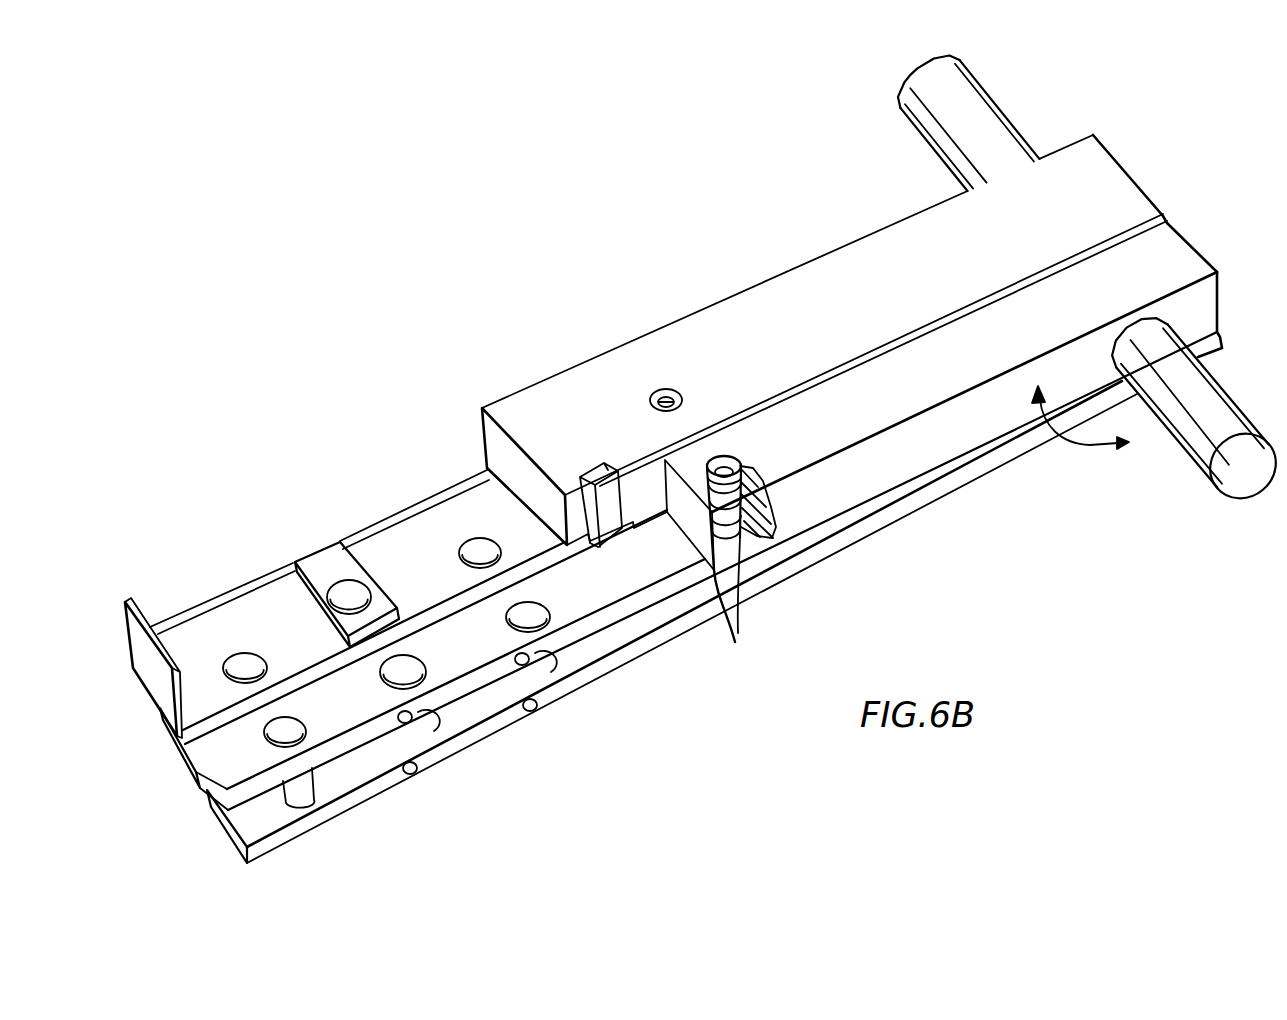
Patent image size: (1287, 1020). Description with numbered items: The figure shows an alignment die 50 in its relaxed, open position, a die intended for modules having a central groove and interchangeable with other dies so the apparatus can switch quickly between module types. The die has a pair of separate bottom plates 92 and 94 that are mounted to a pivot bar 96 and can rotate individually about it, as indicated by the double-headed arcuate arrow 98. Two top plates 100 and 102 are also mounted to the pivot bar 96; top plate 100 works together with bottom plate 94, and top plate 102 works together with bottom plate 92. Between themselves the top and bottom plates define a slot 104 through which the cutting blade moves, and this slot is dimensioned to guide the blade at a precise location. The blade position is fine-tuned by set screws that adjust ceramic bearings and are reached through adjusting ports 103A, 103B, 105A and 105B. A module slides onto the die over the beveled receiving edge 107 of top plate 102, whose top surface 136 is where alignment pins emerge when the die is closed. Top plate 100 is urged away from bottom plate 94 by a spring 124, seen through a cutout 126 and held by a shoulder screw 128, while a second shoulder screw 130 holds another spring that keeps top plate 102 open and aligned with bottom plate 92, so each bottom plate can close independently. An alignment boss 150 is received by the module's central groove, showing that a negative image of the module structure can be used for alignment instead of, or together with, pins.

The alignment die 50 is at (546, 349).
The bottom plate 92 is at (167, 741).
The bottom plate 94 is at (283, 833).
The pivot bar 96 is at (1187, 465).
The double-headed arcuate arrow 98 is at (1080, 446).
The top plate 100 is at (893, 403).
The top plate 102 is at (746, 295).
The adjusting port 103A is at (418, 780).
The adjusting port 103B is at (418, 735).
The slot 104 is at (297, 680).
The adjusting port 105A is at (540, 708).
The adjusting port 105B is at (536, 666).
The receiving edge 107 is at (432, 502).
The spring 124 is at (738, 606).
The cutout 126 is at (771, 540).
The shoulder screw 128 is at (742, 458).
The shoulder screw 130 is at (682, 394).
The top surface 136 is at (233, 606).
The alignment boss 150 is at (310, 558).